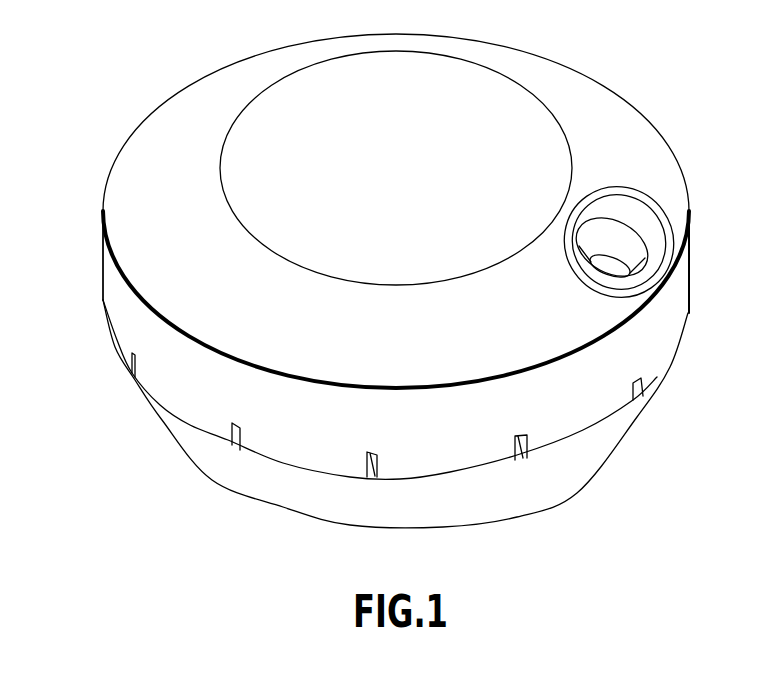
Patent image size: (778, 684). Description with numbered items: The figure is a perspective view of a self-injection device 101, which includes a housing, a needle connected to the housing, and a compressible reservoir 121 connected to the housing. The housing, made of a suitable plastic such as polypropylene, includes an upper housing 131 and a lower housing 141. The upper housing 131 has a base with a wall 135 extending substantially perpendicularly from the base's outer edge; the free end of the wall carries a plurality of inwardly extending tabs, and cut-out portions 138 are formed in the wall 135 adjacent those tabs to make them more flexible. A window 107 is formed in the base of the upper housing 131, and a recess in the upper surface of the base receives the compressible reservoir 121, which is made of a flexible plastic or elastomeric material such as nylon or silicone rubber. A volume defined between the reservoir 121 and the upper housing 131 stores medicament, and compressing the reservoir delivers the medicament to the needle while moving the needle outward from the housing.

The self-injection device 101 is at (397, 287).
The window 107 is at (617, 262).
The compressible reservoir 121 is at (470, 98).
The upper housing 131 is at (675, 148).
The wall 135 is at (103, 282).
The cut-out portions 138 is at (383, 463).
The lower housing 141 is at (604, 465).